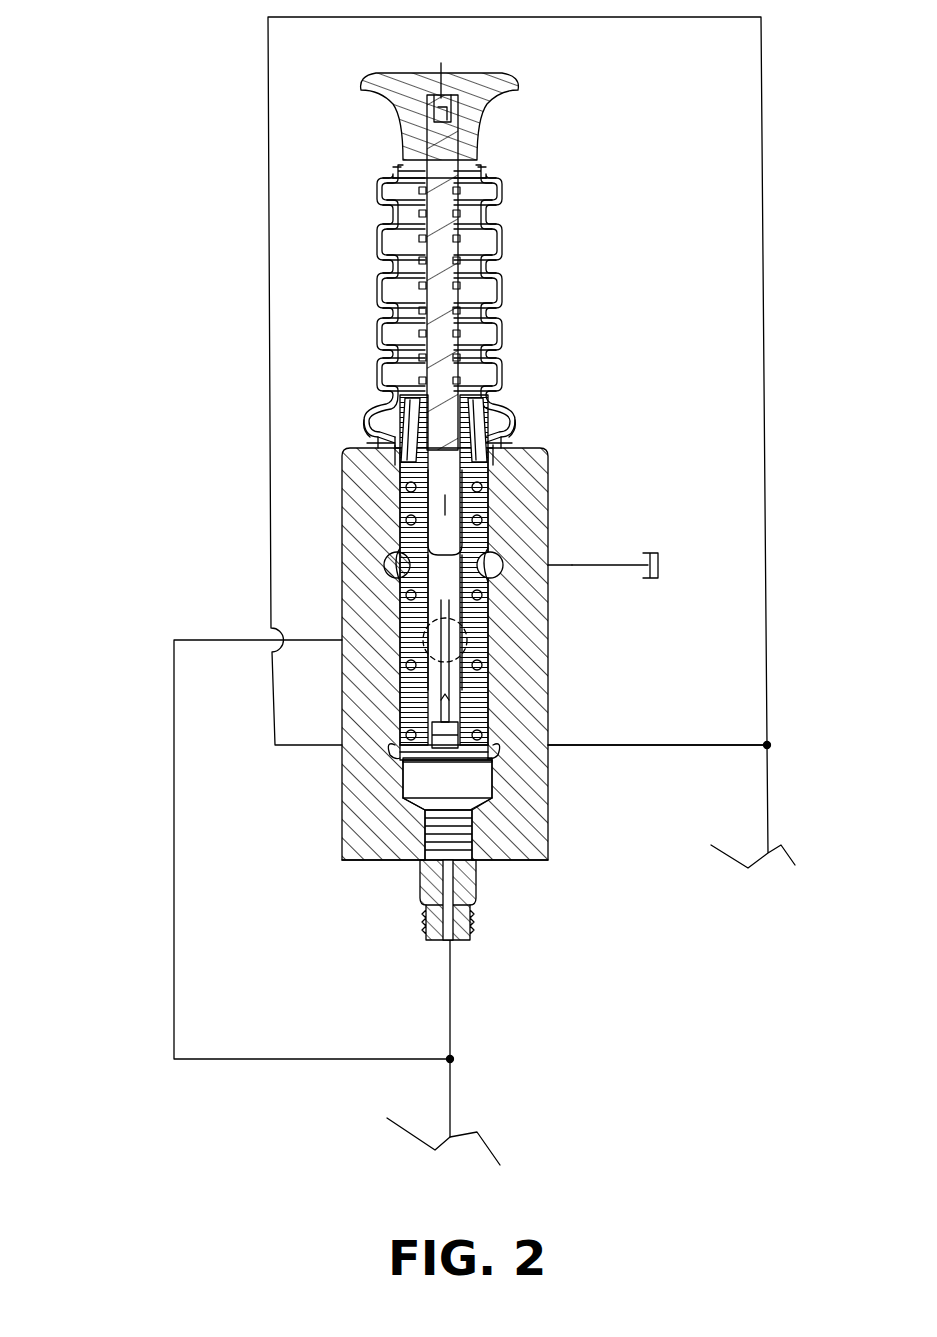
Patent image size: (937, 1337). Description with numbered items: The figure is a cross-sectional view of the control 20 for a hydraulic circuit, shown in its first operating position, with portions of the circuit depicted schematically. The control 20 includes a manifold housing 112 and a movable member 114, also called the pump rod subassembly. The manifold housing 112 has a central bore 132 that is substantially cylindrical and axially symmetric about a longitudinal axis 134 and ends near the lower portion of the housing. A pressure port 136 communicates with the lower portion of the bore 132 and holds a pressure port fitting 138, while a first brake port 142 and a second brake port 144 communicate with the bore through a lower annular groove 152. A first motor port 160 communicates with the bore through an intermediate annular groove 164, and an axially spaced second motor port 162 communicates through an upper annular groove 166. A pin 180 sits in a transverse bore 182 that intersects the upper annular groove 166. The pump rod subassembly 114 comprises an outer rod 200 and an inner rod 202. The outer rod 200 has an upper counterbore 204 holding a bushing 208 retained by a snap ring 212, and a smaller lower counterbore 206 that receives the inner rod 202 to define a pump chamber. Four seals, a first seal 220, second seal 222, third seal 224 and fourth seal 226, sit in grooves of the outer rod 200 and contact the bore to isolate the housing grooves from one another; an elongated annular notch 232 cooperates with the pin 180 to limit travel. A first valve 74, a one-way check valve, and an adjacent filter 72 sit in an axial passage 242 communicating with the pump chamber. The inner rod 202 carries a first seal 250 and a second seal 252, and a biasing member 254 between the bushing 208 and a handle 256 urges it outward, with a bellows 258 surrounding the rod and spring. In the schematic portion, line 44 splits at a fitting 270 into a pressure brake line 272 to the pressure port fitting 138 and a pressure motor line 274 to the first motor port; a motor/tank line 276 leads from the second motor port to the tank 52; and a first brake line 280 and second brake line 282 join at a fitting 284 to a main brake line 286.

The control 20 is at (633, 238).
The line 44 is at (452, 1105).
The tank 52 is at (658, 553).
The filter 72 is at (460, 742).
The first valve 74 is at (462, 704).
The manifold housing 112 is at (552, 857).
The movable member 114 is at (540, 342).
The central bore 132 is at (482, 797).
The longitudinal axis 134 is at (458, 880).
The pressure port 136 is at (462, 864).
The pressure port fitting 138 is at (466, 930).
The first brake port 142 is at (442, 758).
The second brake port 144 is at (492, 786).
The lower annular groove 152 is at (435, 752).
The first motor port 160 is at (362, 662).
The second motor port 162 is at (497, 562).
The intermediate annular groove 164 is at (520, 641).
The upper annular groove 166 is at (503, 530).
The pin 180 is at (498, 575).
The transverse bore 182 is at (420, 570).
The outer rod 200 is at (405, 420).
The inner rod 202 is at (440, 330).
The upper counterbore 204 is at (405, 400).
The lower counterbore 206 is at (432, 620).
The bushing 208 is at (512, 425).
The snap ring 212 is at (490, 406).
The first seal 220 is at (412, 462).
The second seal 222 is at (425, 600).
The third seal 224 is at (428, 688).
The fourth seal 226 is at (405, 740).
The elongated annular notch 232 is at (384, 567).
The axial passage 242 is at (445, 762).
The first seal 250 is at (410, 543).
The second seal 252 is at (482, 490).
The biasing member 254 is at (428, 245).
The handle 256 is at (413, 135).
The bellows 258 is at (500, 192).
The fitting 270 is at (452, 1058).
The pressure brake line 272 is at (450, 993).
The pressure motor line 274 is at (174, 895).
The motor/tank line 276 is at (574, 563).
The first brake line 280 is at (269, 503).
The second brake line 282 is at (675, 750).
The fitting 284 is at (769, 745).
The main brake line 286 is at (770, 800).